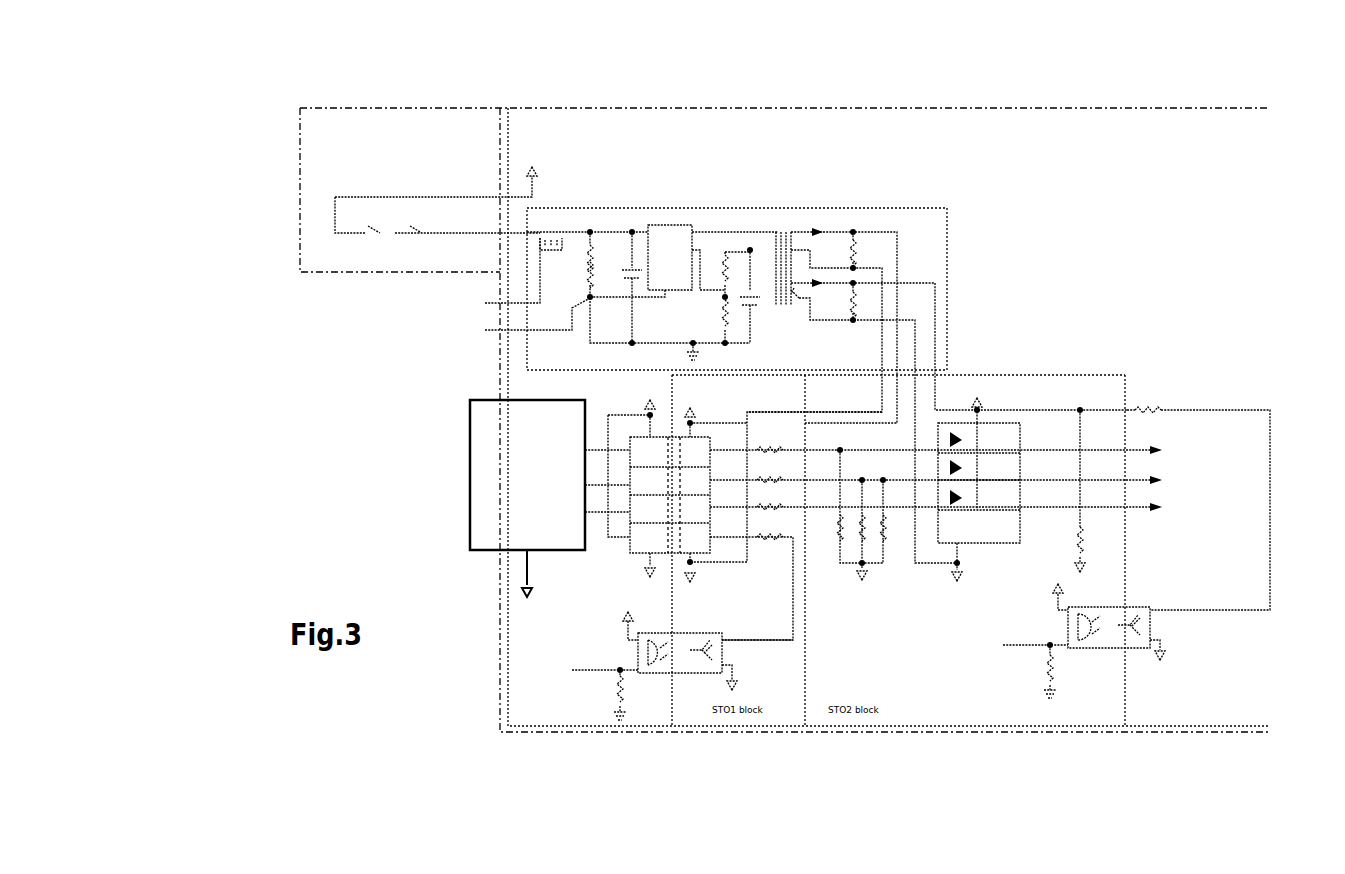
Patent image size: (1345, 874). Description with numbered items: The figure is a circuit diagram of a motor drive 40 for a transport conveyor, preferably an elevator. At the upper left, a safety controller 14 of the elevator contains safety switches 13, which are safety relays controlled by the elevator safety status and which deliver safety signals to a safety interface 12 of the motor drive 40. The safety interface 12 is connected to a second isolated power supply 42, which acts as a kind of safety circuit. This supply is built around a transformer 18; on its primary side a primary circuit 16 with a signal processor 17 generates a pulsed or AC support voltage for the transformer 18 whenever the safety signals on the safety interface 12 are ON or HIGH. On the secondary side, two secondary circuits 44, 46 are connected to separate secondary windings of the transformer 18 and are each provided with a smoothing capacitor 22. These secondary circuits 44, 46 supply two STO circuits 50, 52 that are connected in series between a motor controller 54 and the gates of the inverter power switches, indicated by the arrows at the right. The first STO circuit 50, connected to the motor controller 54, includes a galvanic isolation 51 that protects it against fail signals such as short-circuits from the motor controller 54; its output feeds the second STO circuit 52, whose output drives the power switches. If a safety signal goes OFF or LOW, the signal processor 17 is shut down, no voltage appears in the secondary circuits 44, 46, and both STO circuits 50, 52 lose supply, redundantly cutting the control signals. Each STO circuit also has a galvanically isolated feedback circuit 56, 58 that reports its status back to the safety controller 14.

The safety interface 12 is at (492, 122).
The safety switches 13 is at (422, 225).
The safety controller 14 is at (383, 160).
The primary circuit 16 is at (712, 222).
The signal processor 17 is at (663, 248).
The transformer 18 is at (795, 232).
The smoothing capacitor 22 is at (862, 300).
The motor drive 40 is at (340, 468).
The second isolated power supply 42 is at (782, 206).
The first secondary circuit 44 is at (832, 234).
The second secondary circuit 46 is at (797, 294).
The first STO circuit 50 is at (688, 512).
The galvanic isolation 51 is at (668, 483).
The second STO circuit 52 is at (995, 440).
The motor controller 54 is at (508, 475).
The first feedback circuit 56 is at (688, 685).
The second feedback circuit 58 is at (1078, 658).